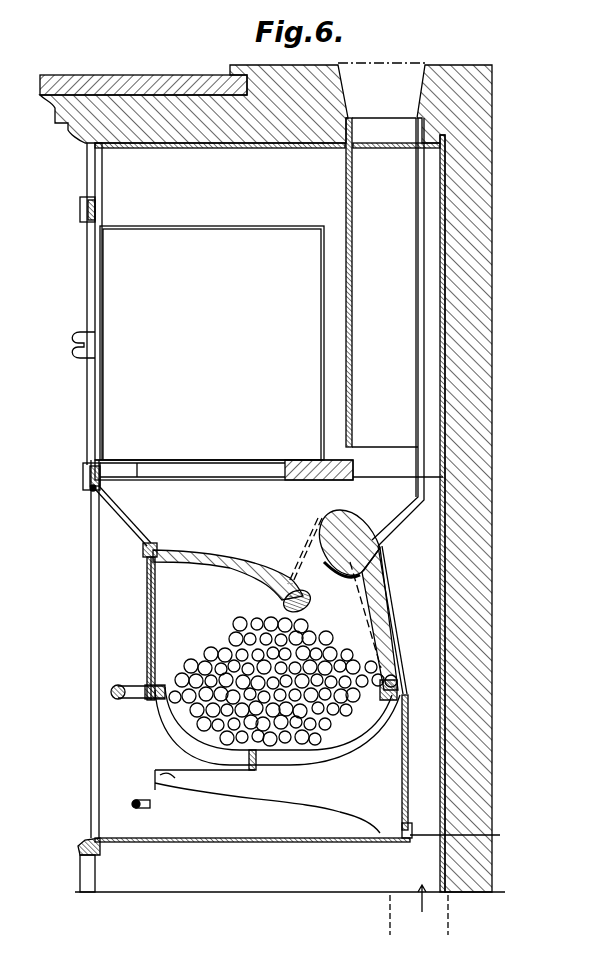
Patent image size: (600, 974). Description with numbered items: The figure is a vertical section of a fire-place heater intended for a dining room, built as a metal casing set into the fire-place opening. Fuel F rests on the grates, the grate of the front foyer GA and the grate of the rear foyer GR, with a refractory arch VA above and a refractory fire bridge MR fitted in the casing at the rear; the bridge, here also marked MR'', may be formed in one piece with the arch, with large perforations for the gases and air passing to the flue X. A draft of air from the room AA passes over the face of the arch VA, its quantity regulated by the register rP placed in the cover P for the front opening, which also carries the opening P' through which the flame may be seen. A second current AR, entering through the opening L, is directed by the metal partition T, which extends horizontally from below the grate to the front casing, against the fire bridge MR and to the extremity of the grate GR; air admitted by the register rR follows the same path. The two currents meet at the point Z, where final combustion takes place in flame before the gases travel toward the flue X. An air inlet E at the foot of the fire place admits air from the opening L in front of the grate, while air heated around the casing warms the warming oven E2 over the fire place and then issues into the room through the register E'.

The register E' is at (100, 490).
The warming oven E2 is at (212, 343).
The flue X is at (394, 332).
The opening P' is at (122, 515).
The arch VA is at (245, 570).
The draft of air from the front AA is at (260, 594).
The point of contact Z is at (318, 519).
The fire bridge MR'' is at (350, 541).
The rear current of air AR is at (358, 598).
The fire bridge MR is at (395, 623).
The register rP is at (152, 595).
The fuel F is at (229, 656).
The cover P is at (138, 628).
The grate of the front foyer GA is at (200, 748).
The grate of the rear foyer GR is at (310, 768).
The partition T is at (200, 782).
The register rR is at (135, 797).
The air inlet E is at (79, 865).
The opening L is at (419, 913).